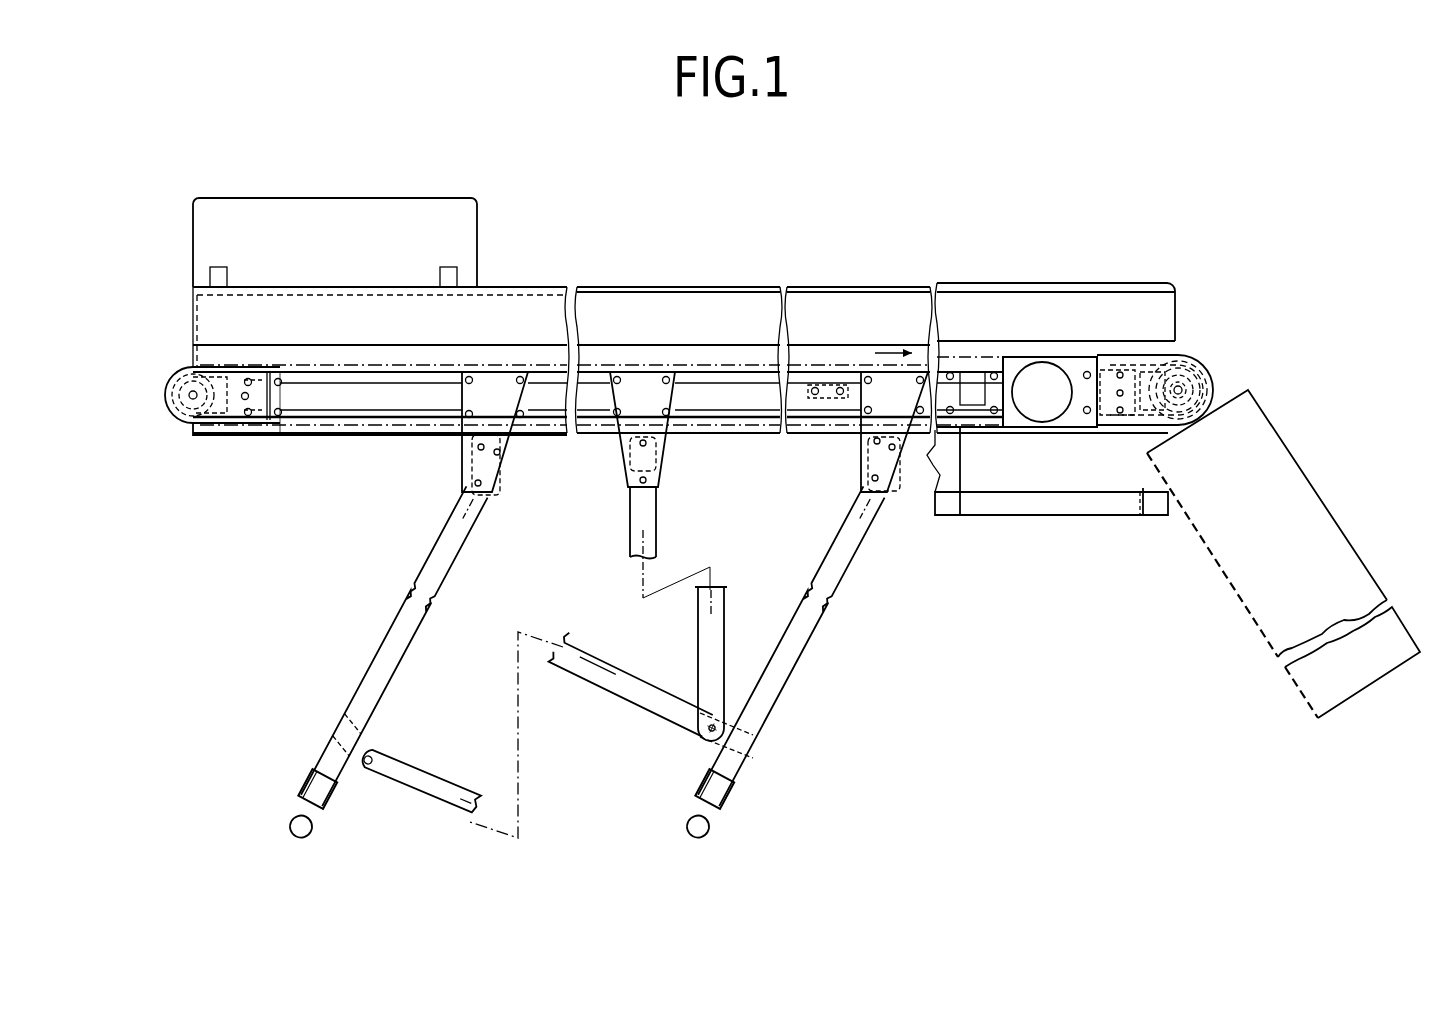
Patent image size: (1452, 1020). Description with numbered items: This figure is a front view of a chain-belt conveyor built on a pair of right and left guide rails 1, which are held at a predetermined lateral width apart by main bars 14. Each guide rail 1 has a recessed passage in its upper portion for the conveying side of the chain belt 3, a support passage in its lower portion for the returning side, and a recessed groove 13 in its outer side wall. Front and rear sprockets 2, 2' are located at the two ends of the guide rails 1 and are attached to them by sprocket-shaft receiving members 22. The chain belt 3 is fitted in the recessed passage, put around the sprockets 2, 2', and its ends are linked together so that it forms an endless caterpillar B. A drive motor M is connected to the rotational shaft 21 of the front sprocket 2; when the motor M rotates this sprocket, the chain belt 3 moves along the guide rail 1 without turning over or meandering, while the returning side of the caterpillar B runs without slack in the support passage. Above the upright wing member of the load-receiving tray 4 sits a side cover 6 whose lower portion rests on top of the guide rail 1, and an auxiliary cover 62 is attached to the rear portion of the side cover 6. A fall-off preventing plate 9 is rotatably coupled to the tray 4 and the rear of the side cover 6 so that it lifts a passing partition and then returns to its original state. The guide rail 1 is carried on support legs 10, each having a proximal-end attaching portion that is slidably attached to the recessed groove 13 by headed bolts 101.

The guide rail 1 is at (335, 433).
The front sprocket 2 is at (1197, 352).
The rear sprocket 2' is at (168, 374).
The chain belt 3 is at (287, 175).
The load-receiving tray 4 is at (1175, 255).
The side cover 6 is at (630, 297).
The fall-off preventing plate 9 is at (197, 337).
The support leg 10 is at (312, 790).
The headed bolt 101 is at (470, 397).
The recessed groove 13 is at (848, 375).
The main bar 14 is at (812, 433).
The rotational shaft 21 is at (1180, 390).
The sprocket-shaft receiving member 22 is at (1183, 355).
The auxiliary cover 62 is at (205, 243).
The endless caterpillar B is at (514, 362).
The drive motor M is at (1030, 408).